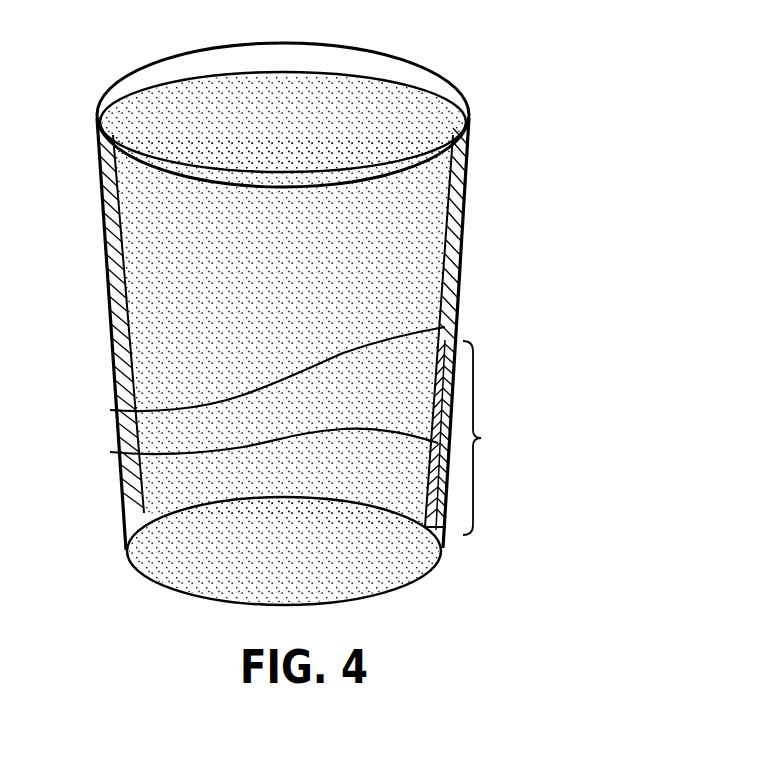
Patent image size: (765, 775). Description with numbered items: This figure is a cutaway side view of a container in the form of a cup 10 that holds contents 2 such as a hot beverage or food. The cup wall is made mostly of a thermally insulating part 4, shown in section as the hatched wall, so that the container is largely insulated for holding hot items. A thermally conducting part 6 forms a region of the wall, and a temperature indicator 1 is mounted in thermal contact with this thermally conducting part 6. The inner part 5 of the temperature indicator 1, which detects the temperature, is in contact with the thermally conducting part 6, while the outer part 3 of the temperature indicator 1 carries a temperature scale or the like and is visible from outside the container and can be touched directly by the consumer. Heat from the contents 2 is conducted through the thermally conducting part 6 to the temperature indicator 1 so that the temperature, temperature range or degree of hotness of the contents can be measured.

The cup 10 is at (496, 163).
The temperature indicator 1 is at (481, 438).
The contents 2 is at (375, 293).
The outer part of the temperature indicator 3 is at (454, 388).
The thermally insulating part 4 is at (110, 270).
The inner part of the temperature indicator 5 is at (110, 452).
The thermally conducting part 6 is at (122, 322).